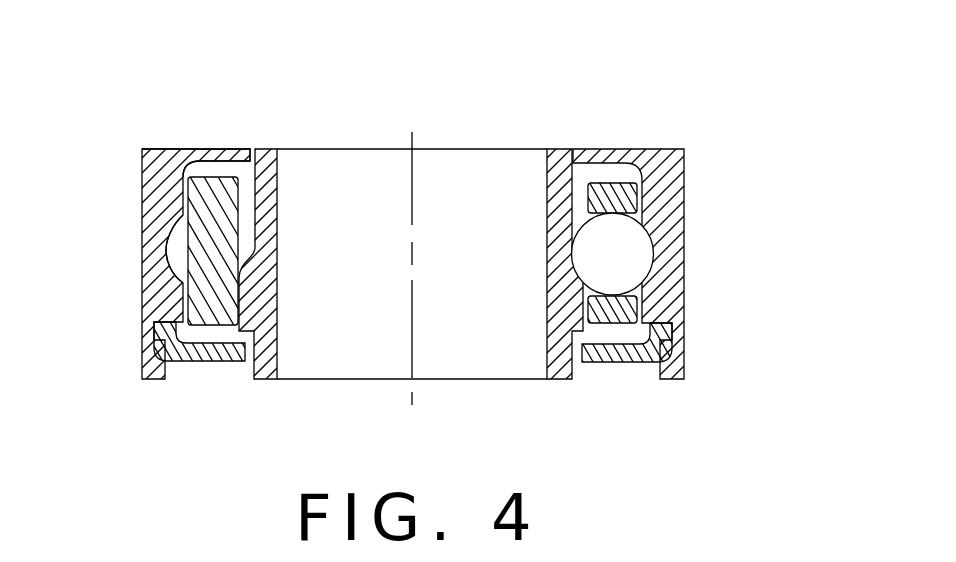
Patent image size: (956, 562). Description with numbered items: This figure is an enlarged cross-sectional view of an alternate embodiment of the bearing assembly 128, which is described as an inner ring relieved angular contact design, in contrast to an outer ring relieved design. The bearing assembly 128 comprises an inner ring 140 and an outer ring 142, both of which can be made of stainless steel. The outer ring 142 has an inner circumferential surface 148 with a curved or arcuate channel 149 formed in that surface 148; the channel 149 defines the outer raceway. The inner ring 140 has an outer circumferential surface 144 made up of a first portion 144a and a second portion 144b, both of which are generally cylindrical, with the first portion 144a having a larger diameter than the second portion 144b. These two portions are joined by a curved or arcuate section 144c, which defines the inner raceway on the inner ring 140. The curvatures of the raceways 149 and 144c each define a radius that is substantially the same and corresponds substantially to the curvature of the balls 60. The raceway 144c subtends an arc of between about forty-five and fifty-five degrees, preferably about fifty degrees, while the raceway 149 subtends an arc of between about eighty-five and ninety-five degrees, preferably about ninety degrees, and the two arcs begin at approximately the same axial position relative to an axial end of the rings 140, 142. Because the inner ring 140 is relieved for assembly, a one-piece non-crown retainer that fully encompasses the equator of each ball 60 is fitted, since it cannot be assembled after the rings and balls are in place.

The bearing assembly 128 is at (328, 93).
The ball 60 is at (605, 235).
The inner ring 140 is at (535, 279).
The outer ring 142 is at (690, 213).
The outer circumferential surface 144 is at (593, 298).
The first portion 144a is at (232, 323).
The second portion 144b is at (250, 194).
The arcuate section 144c is at (247, 261).
The inner circumferential surface 148 is at (632, 228).
The arcuate channel 149 is at (178, 242).